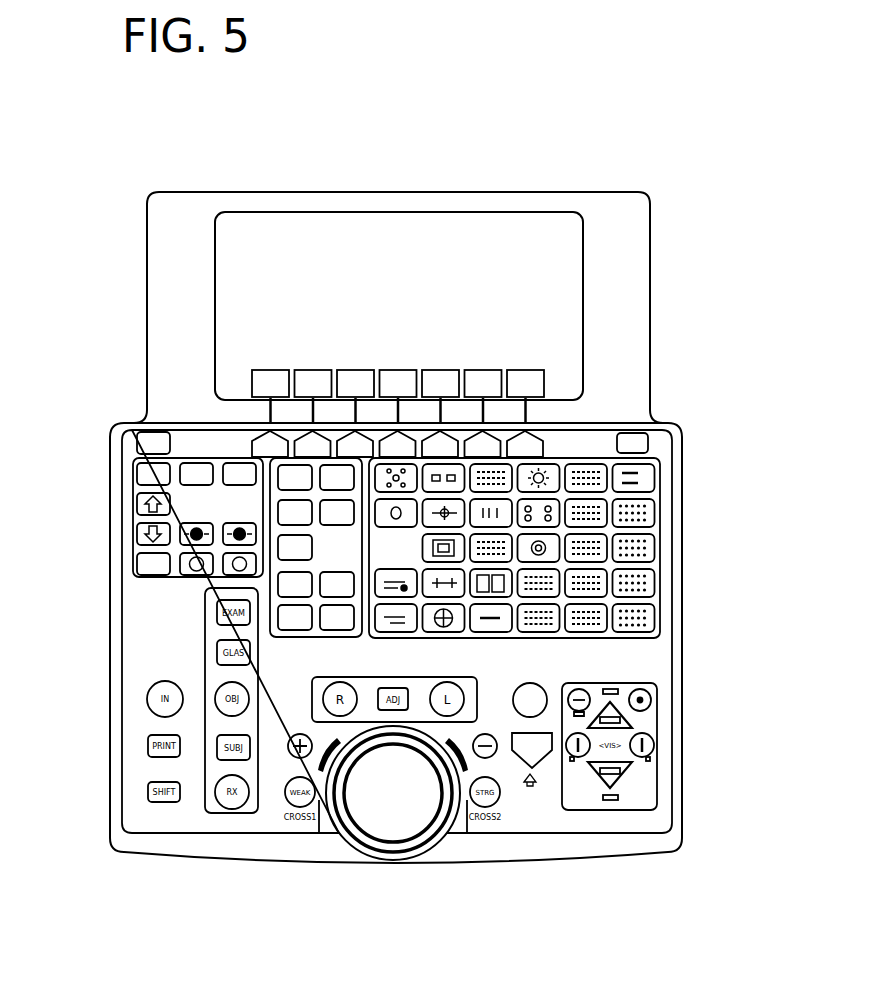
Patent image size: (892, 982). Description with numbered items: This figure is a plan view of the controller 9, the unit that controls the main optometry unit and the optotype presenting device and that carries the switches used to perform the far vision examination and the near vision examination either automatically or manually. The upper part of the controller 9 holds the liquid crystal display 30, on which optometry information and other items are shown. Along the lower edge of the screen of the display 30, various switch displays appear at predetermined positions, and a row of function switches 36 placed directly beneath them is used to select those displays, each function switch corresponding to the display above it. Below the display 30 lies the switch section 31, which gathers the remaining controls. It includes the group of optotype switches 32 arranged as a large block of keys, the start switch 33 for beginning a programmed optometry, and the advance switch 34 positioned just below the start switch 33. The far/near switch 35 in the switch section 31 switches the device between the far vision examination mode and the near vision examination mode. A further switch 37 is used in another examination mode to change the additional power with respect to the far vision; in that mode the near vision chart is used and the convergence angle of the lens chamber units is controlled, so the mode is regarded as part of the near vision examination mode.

The controller 9 is at (139, 177).
The liquid crystal display 30 is at (233, 322).
The switch section 31 is at (658, 438).
The group of optotype switches 32 is at (653, 530).
The start switch 33 is at (545, 683).
The advance switch 34 is at (533, 769).
The far/near switch 35 is at (227, 467).
The group of function switches 36 is at (543, 447).
The switch 37 is at (280, 574).